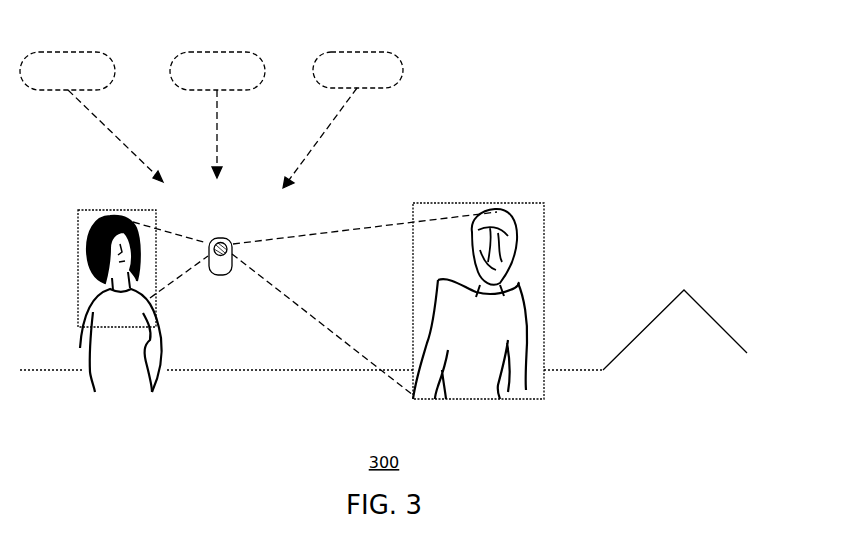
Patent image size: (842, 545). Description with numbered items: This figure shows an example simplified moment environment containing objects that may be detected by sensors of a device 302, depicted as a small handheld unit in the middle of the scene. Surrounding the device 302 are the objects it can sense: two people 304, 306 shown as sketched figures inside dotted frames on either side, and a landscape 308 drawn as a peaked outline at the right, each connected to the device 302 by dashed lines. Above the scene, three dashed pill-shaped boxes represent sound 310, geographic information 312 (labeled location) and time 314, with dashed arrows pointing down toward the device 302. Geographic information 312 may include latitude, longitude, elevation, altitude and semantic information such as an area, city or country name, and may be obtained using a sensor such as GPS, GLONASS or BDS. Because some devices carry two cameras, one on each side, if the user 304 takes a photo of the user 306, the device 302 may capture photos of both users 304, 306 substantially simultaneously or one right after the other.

The device 302 is at (221, 275).
The person 304 is at (108, 218).
The person 306 is at (498, 213).
The landscape 308 is at (690, 293).
The sound 310 is at (73, 52).
The geographic information 312 is at (222, 52).
The time 314 is at (361, 52).